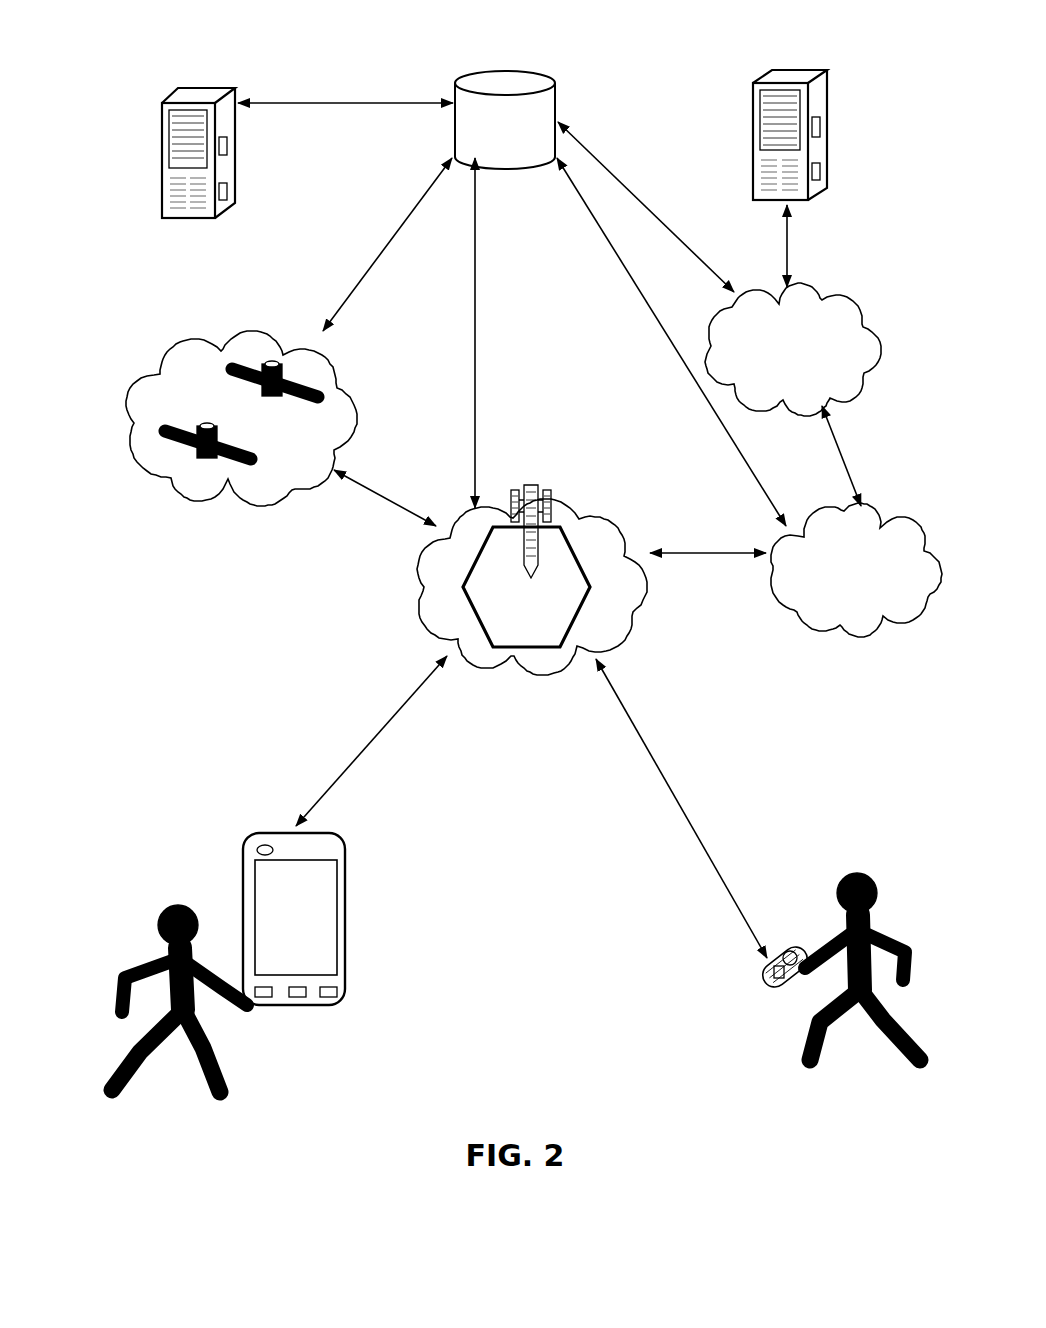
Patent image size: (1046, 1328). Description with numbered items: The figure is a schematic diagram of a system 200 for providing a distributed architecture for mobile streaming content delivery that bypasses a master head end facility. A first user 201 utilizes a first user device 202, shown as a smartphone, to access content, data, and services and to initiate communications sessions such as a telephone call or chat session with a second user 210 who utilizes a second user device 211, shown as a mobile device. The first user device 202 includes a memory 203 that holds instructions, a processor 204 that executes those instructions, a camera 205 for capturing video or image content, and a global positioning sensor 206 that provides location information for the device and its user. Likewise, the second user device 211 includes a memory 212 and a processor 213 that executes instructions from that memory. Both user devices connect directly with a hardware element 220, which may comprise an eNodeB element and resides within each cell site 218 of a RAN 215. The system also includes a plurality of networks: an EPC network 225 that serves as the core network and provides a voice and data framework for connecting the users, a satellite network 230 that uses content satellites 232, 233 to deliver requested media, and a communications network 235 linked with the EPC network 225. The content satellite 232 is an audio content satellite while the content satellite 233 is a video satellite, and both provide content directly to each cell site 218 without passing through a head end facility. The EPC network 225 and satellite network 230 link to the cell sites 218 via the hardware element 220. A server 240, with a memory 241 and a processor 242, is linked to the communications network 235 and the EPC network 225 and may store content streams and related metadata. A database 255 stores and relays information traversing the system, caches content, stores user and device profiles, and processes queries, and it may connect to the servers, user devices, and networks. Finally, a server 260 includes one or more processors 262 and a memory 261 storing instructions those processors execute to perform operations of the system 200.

The system 200 is at (268, 55).
The first user 201 is at (127, 1096).
The first user device 202 is at (243, 895).
The memory 203 is at (263, 1006).
The processor 204 is at (327, 1006).
The camera 205 is at (257, 849).
The global positioning sensor 206 is at (297, 1006).
The second user 210 is at (921, 1067).
The second user device 211 is at (766, 974).
The memory 212 is at (780, 985).
The processor 213 is at (786, 955).
The RAN 215 is at (426, 636).
The cell site 218 is at (463, 587).
The hardware element 220 is at (520, 551).
The EPC network 225 is at (870, 637).
The satellite network 230 is at (172, 349).
The content satellite 232 is at (203, 460).
The content satellite 233 is at (272, 362).
The communications network 235 is at (878, 365).
The server 240 is at (752, 107).
The memory 241 is at (822, 127).
The processor 242 is at (822, 172).
The database 255 is at (505, 120).
The server 260 is at (161, 127).
The memory 261 is at (230, 192).
The processors 262 is at (230, 146).